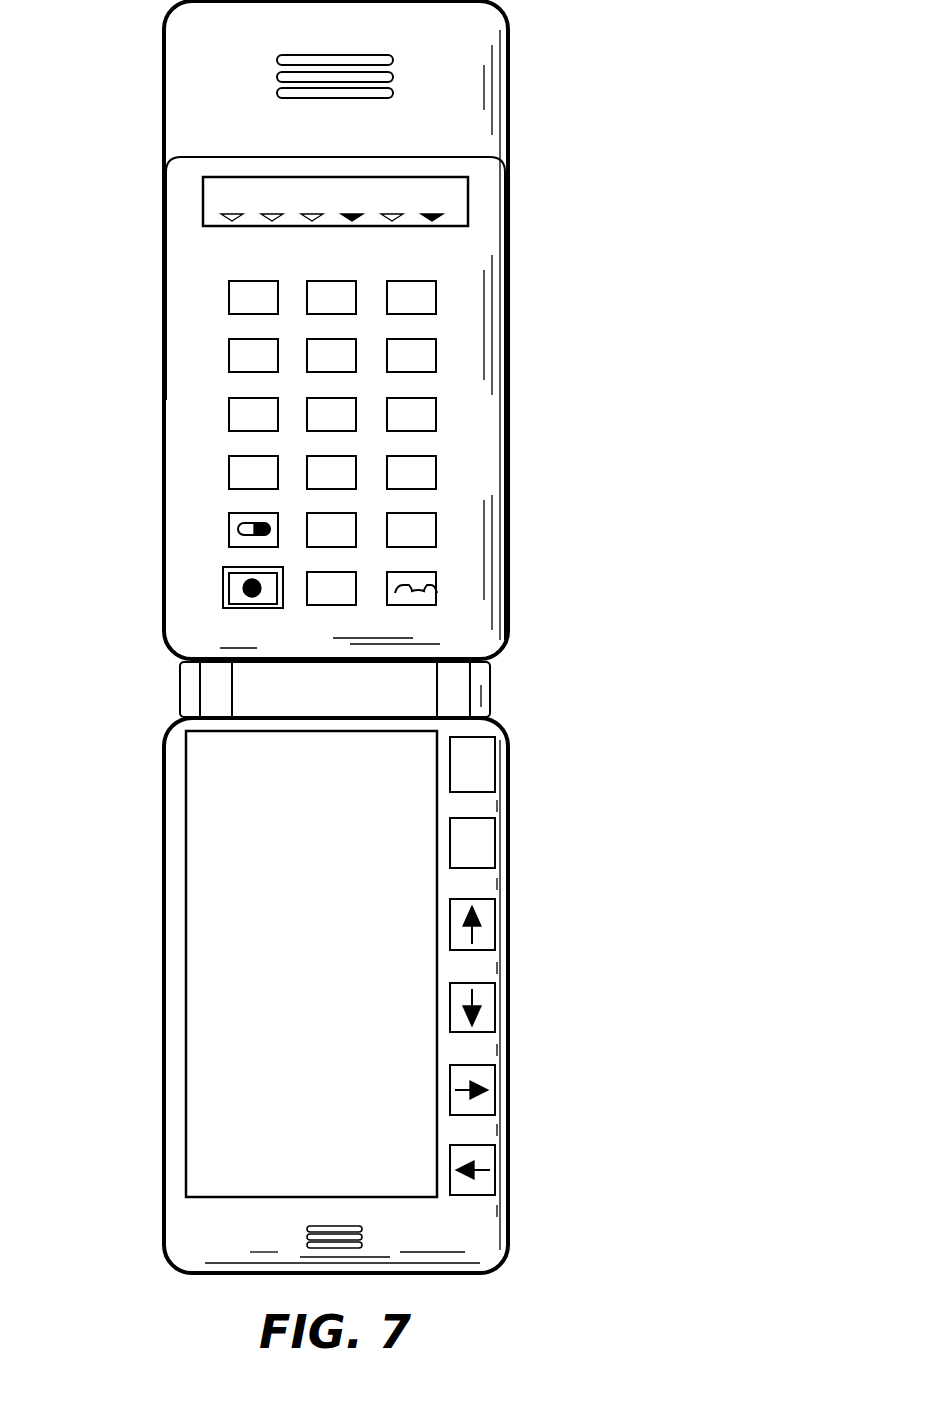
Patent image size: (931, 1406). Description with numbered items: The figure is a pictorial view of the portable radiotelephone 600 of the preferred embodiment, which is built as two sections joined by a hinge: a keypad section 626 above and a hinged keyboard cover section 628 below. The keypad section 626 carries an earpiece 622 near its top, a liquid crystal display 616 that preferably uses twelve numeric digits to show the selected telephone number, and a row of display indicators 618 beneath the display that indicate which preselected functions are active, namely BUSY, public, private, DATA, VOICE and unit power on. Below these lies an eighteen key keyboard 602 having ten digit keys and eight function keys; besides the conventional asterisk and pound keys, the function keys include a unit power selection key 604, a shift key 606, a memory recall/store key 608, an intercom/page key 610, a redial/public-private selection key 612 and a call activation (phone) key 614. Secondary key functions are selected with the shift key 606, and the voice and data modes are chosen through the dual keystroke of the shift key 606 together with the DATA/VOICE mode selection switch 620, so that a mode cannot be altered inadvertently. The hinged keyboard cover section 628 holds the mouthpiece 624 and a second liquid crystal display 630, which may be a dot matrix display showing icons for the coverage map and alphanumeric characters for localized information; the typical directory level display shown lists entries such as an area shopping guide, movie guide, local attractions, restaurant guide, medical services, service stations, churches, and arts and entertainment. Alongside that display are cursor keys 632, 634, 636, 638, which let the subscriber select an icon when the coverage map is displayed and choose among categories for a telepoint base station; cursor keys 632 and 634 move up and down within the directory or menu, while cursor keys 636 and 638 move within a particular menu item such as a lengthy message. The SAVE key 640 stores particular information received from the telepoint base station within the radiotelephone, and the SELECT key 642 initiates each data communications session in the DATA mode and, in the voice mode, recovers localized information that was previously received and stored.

The portable radiotelephone 600 is at (351, 645).
The keyboard 602 is at (379, 477).
The unit power selection key 604 is at (228, 528).
The shift key 606 is at (222, 586).
The memory recall/store key 608 is at (334, 608).
The intercom/page key 610 is at (305, 513).
The redial/public-private selection key 612 is at (440, 528).
The call activation (phone) key 614 is at (479, 608).
The liquid crystal (LCD) display 616 is at (272, 185).
The row of display indicators 618 is at (223, 214).
The DATA/VOICE mode selection switch 620 is at (228, 410).
The earpiece 622 is at (272, 58).
The mouthpiece 624 is at (375, 1230).
The keypad section 626 is at (163, 372).
The hinged keyboard cover section 628 is at (163, 942).
The second liquid crystal (LCD) display 630 is at (225, 825).
The cursor key 632 is at (495, 1165).
The cursor key 634 is at (495, 1085).
The cursor key 636 is at (495, 1002).
The cursor key 638 is at (495, 922).
The SAVE key 640 is at (495, 840).
The SELECT key 642 is at (495, 762).